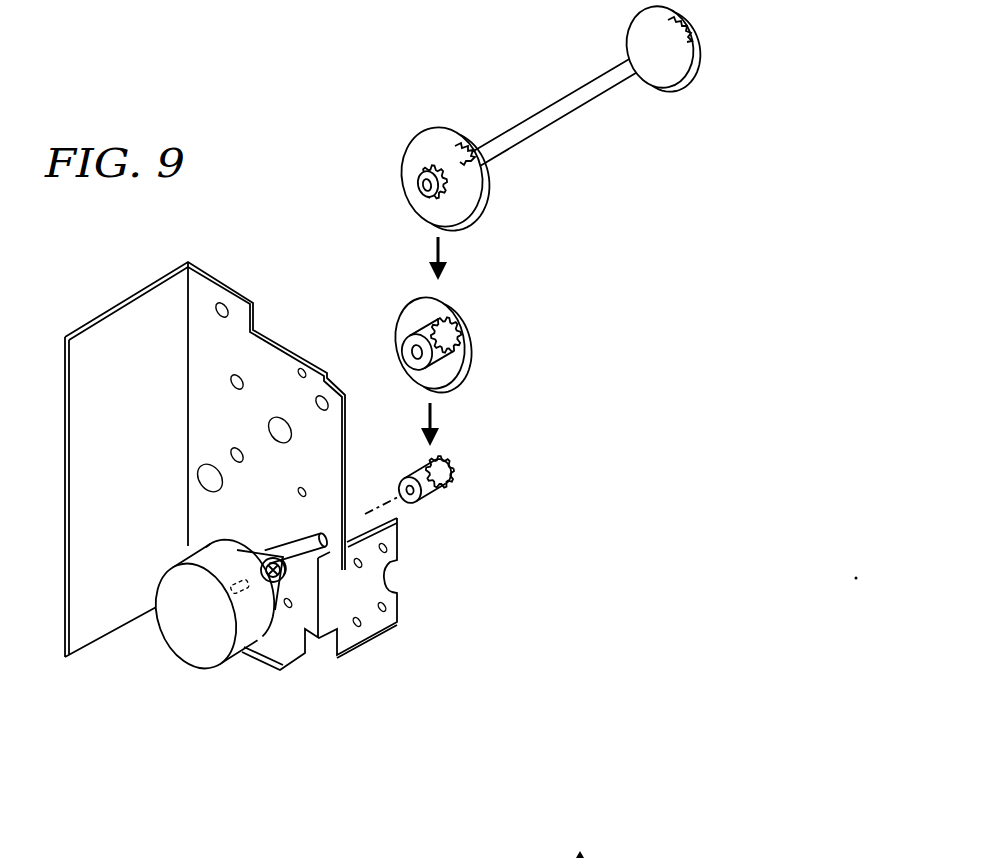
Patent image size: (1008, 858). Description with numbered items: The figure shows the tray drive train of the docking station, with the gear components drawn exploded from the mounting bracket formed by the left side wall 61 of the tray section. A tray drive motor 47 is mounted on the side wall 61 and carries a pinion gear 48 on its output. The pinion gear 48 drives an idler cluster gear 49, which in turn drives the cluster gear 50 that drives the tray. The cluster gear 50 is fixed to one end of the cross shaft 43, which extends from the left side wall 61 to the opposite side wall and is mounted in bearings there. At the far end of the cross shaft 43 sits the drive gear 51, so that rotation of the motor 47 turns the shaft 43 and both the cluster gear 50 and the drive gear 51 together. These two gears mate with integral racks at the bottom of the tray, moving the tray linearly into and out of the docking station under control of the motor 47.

The side wall 61 is at (222, 280).
The motor 47 is at (196, 638).
The pinion gear 48 is at (440, 495).
The idler cluster gear 49 is at (470, 360).
The cluster gear 50 is at (422, 132).
The cross shaft 43 is at (590, 78).
The drive gear 51 is at (690, 75).